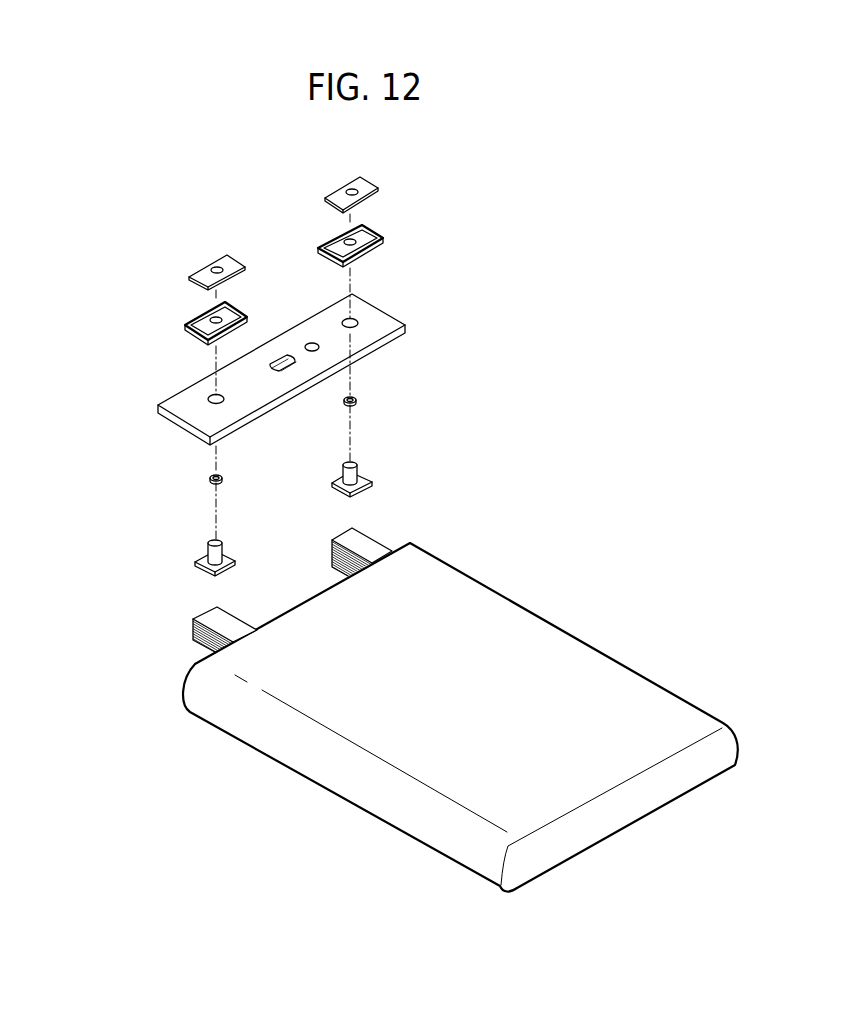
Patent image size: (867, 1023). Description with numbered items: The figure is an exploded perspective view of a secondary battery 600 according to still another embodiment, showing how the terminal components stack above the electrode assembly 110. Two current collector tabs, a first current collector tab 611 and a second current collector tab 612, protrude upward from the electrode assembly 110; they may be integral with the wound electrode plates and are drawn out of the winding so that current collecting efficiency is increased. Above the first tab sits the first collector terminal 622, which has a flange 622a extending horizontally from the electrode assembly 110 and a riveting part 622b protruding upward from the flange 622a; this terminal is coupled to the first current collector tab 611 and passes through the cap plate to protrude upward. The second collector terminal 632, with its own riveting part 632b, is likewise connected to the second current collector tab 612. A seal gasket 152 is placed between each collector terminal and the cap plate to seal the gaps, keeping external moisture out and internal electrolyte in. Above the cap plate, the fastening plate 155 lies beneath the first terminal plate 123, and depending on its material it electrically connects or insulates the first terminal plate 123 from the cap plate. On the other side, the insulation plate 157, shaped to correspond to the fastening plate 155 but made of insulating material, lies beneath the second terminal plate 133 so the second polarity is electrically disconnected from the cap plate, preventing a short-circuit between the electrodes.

The secondary battery 600 is at (648, 152).
The electrode assembly 110 is at (383, 805).
The first current collector tab 611 is at (233, 620).
The second current collector tab 612 is at (367, 545).
The first collector terminal 622 is at (156, 551).
The flange 622a is at (196, 560).
The riveting part 622b is at (208, 544).
The second collector terminal 632 is at (412, 465).
The riveting part 632b is at (362, 463).
The seal gasket 152 is at (358, 399).
The first terminal plate 123 is at (203, 267).
The second terminal plate 133 is at (363, 188).
The fastening plate 155 is at (196, 317).
The insulation plate 157 is at (365, 235).